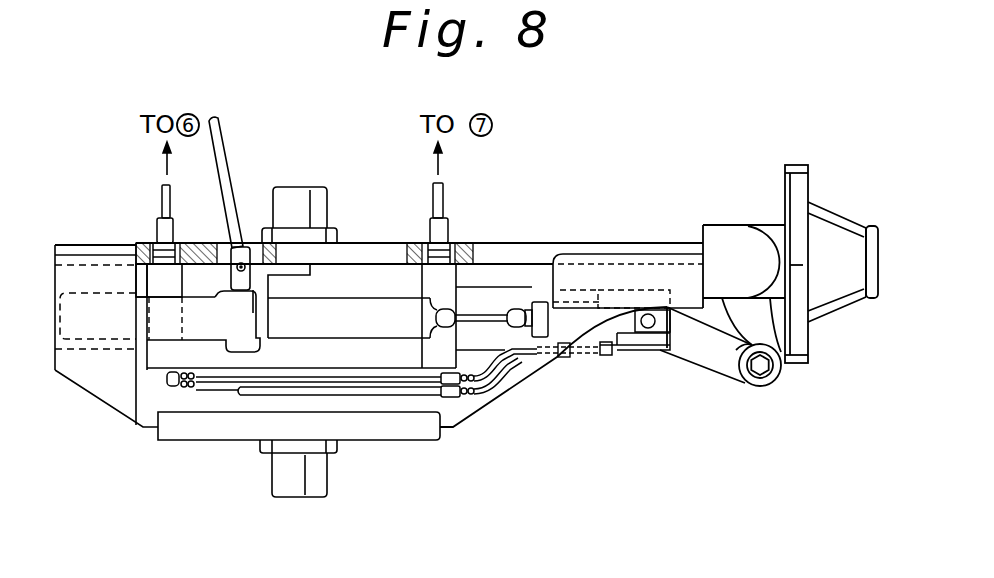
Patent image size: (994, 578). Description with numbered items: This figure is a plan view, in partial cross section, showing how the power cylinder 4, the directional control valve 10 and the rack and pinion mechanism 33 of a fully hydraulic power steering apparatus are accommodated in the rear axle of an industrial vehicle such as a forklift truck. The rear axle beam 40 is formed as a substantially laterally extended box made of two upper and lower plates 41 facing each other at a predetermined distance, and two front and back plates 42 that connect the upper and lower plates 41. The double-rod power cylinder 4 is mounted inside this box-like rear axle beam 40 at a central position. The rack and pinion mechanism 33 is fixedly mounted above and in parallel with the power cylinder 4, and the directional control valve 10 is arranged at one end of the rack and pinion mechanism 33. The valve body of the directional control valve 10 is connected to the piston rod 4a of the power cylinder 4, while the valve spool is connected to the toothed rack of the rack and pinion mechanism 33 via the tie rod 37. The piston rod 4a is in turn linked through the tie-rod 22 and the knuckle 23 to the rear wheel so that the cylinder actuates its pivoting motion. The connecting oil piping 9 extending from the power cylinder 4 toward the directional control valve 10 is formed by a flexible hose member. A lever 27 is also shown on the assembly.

The power cylinder 4 is at (203, 360).
The piston rod 4a is at (517, 340).
The connecting oil piping 9 is at (452, 400).
The directional control valve 10 is at (539, 305).
The tie-rod 22 is at (690, 352).
The knuckle 23 is at (740, 325).
The lever 27 is at (222, 146).
The rack and pinion mechanism 33 is at (238, 352).
The tie rod 37 is at (478, 312).
The rear axle beam 40 is at (534, 243).
The upper and lower plates 41 is at (92, 382).
The front and back plates 42 is at (378, 248).